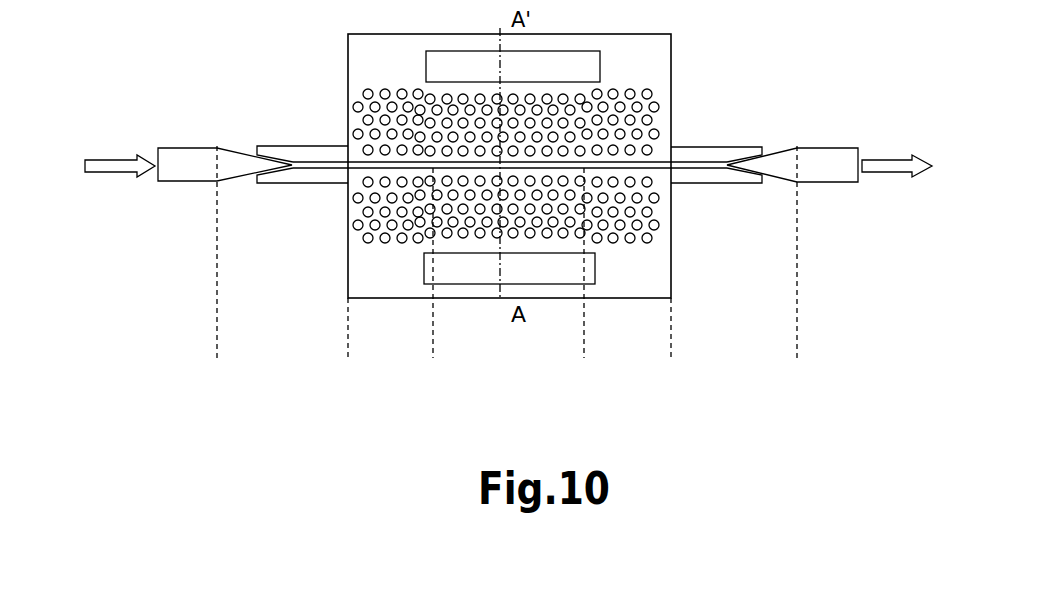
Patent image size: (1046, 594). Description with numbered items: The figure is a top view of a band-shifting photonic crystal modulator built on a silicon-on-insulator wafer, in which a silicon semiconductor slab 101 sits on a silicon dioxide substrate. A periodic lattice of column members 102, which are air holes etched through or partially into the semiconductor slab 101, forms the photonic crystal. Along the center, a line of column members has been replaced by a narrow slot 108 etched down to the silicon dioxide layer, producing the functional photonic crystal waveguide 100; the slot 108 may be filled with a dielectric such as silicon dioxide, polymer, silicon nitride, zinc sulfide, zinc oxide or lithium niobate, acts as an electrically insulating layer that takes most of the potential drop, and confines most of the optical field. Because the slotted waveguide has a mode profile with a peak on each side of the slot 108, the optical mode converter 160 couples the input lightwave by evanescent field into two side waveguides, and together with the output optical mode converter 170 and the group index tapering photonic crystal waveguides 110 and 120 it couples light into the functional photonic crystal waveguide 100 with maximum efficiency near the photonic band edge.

The functional photonic crystal waveguide 100 is at (580, 349).
The semiconductor slab 101 is at (356, 147).
The column members 102 is at (355, 104).
The slot 108 is at (656, 163).
The group index tapering photonic crystal waveguide 110 is at (433, 329).
The group index tapering photonic crystal waveguide 120 is at (671, 338).
The optical mode converter 160 is at (348, 278).
The optical mode converter 170 is at (797, 279).